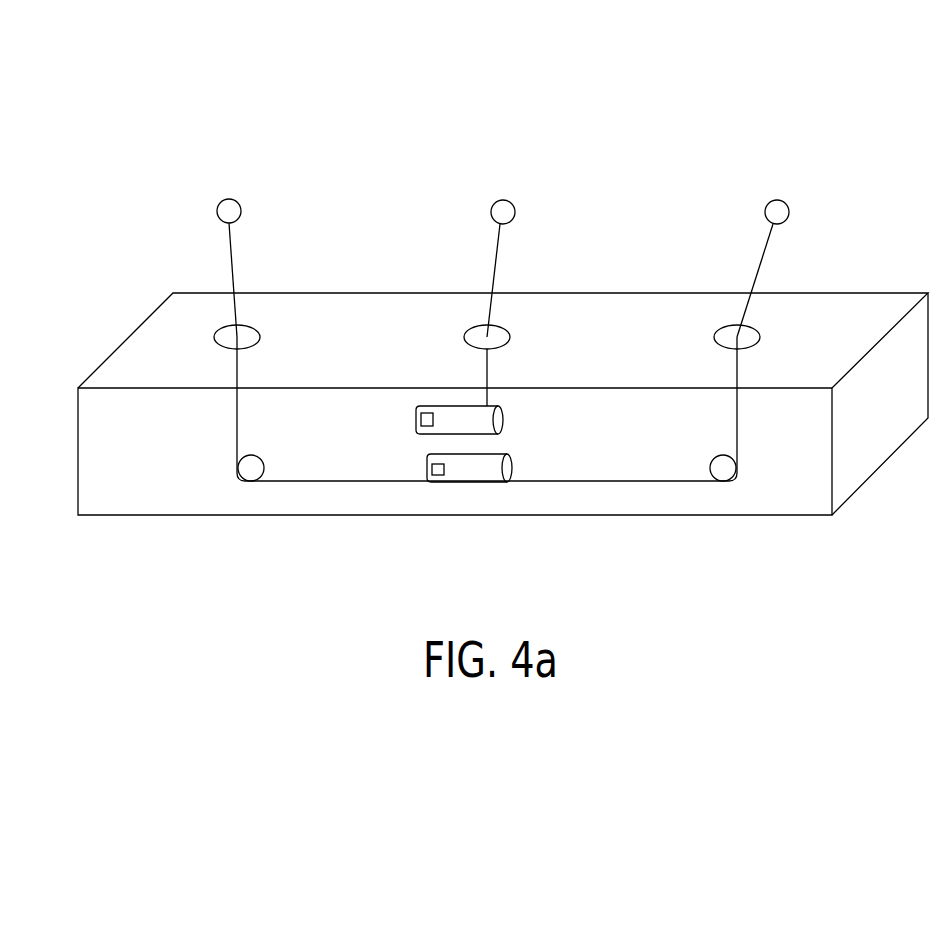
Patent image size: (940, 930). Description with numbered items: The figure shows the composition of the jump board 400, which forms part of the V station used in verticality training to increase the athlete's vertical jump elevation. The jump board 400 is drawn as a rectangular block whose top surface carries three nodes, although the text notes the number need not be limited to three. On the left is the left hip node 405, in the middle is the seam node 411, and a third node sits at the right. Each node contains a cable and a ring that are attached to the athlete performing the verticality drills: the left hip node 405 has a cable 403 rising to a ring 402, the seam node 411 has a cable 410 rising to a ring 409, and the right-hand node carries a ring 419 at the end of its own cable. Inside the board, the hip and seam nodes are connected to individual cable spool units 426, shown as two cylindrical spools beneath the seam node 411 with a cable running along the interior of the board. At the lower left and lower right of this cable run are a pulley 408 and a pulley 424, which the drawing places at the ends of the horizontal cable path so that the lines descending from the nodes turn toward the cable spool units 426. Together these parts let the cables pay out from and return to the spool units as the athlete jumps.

The jump board 400 is at (742, 145).
The ring 402 is at (240, 206).
The cable 403 is at (233, 256).
The left hip node 405 is at (258, 333).
The pulley 408 is at (250, 474).
The ring 409 is at (515, 210).
The cable 410 is at (497, 259).
The seam node 411 is at (509, 333).
The ring 419 is at (789, 210).
The pulley 424 is at (723, 474).
The cable spool unit 426 is at (508, 476).